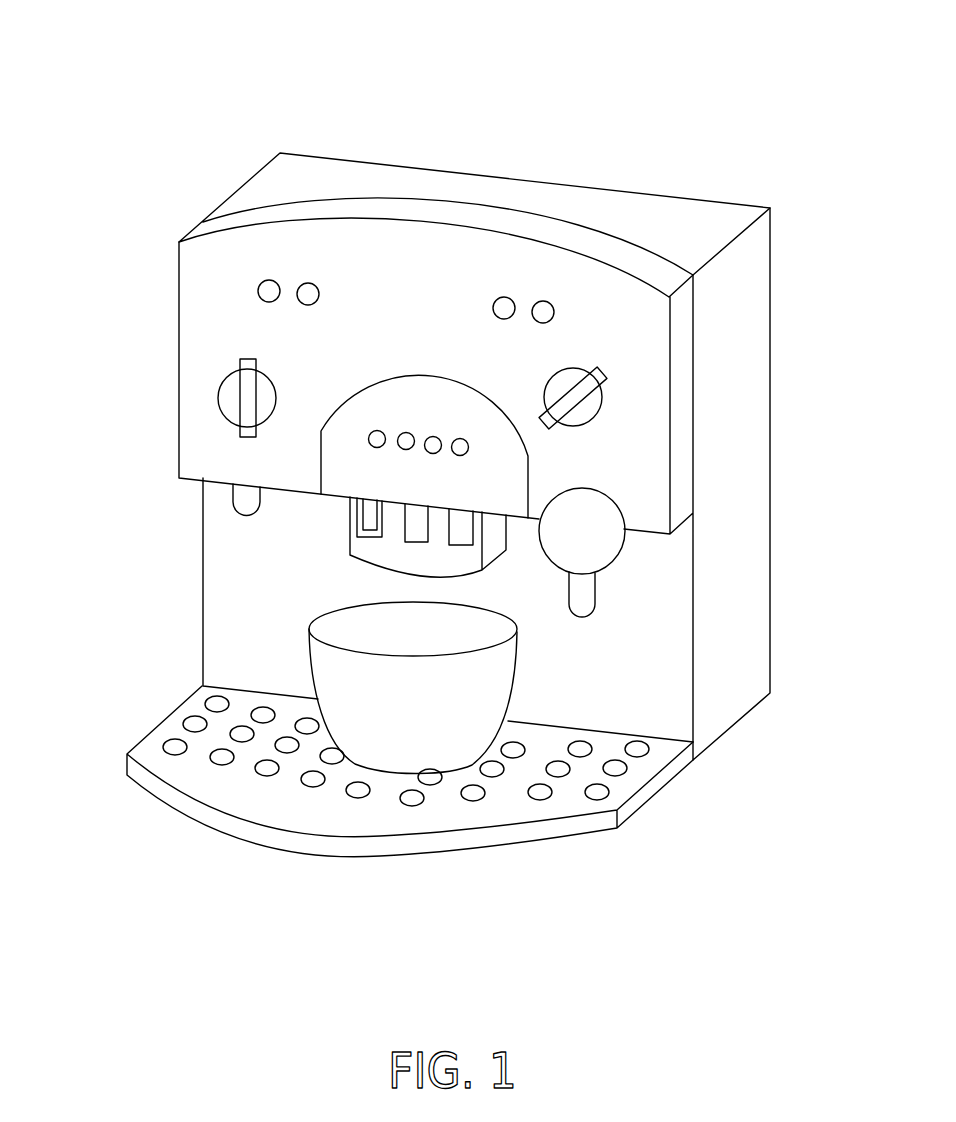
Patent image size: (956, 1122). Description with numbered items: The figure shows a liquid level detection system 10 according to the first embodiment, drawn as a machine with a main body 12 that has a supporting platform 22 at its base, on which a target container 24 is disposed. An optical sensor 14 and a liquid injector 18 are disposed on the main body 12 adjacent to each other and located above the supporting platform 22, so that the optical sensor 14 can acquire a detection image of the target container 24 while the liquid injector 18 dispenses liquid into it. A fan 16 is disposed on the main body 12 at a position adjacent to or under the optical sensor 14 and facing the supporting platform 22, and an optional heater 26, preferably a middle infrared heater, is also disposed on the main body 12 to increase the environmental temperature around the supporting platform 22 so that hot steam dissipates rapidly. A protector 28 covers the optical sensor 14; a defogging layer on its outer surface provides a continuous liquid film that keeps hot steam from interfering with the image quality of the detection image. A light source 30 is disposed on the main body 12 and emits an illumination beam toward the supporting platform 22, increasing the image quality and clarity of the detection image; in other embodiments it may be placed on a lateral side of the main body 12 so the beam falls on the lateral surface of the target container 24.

The liquid level detection system 10 is at (434, 452).
The main body 12 is at (730, 428).
The optical sensor 14 is at (370, 508).
The fan 16 is at (460, 528).
The liquid injector 18 is at (460, 558).
The supporting platform 22 is at (218, 803).
The target container 24 is at (342, 669).
The heater 26 is at (417, 517).
The protector 28 is at (314, 328).
The light source 30 is at (247, 503).